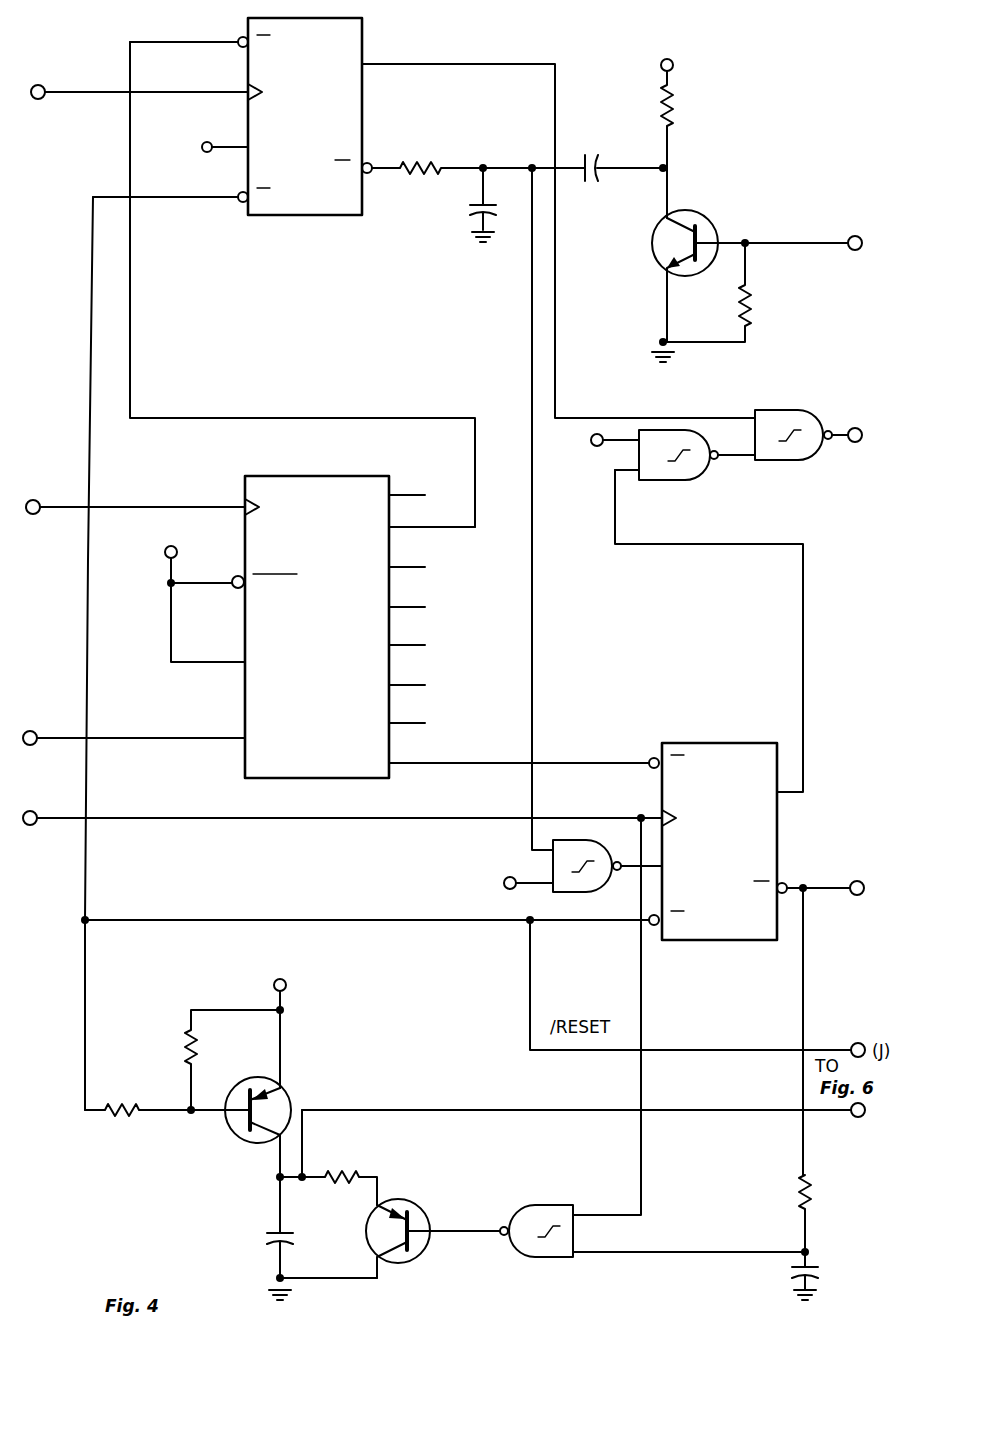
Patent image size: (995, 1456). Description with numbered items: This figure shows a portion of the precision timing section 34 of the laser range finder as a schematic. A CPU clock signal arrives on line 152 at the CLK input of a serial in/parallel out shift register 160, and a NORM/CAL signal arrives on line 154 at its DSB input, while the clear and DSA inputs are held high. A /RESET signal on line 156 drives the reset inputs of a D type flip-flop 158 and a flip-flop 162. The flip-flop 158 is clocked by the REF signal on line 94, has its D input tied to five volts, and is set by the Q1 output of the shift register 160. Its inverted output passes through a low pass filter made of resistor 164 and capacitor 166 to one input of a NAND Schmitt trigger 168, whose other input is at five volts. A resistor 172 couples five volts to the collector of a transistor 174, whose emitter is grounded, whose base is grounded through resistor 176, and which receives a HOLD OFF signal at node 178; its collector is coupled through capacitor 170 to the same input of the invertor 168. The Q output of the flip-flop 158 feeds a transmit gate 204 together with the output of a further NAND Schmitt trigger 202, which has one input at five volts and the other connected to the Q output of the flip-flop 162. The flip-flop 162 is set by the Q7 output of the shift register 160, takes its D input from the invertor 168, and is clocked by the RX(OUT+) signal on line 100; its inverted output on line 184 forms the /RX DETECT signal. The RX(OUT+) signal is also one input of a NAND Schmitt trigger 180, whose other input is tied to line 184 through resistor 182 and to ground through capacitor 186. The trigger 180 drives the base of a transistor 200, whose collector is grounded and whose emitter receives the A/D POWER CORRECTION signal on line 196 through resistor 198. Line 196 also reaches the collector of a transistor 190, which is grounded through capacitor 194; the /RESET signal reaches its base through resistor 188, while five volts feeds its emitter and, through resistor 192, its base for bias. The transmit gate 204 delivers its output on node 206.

The precision timing section 34 is at (68, 1203).
The line 94 is at (103, 92).
The line 100 is at (333, 820).
The line 152 is at (100, 507).
The line 154 is at (100, 738).
The line 156 is at (203, 920).
The D type flip-flop 158 is at (366, 22).
The serial in/parallel out shift register 160 is at (293, 475).
The flip-flop 162 is at (765, 742).
The resistor 164 is at (413, 160).
The capacitor 166 is at (472, 201).
The NAND Schmitt trigger 168 is at (553, 857).
The capacitor 170 is at (570, 183).
The resistor 172 is at (675, 112).
The transistor 174 is at (683, 212).
The resistor 176 is at (755, 300).
The node 178 is at (812, 248).
The NAND Schmitt trigger 180 is at (545, 1258).
The resistor 182 is at (800, 1197).
The line 184 is at (806, 895).
The capacitor 186 is at (795, 1272).
The resistor 188 is at (112, 1115).
The transistor 190 is at (228, 1128).
The resistor 192 is at (185, 1050).
The capacitor 194 is at (268, 1245).
The line 196 is at (660, 1110).
The resistor 198 is at (340, 1170).
The transistor 200 is at (420, 1205).
The NAND Schmitt trigger 202 is at (703, 482).
The transmit gate 204 is at (763, 462).
The node 206 is at (840, 428).